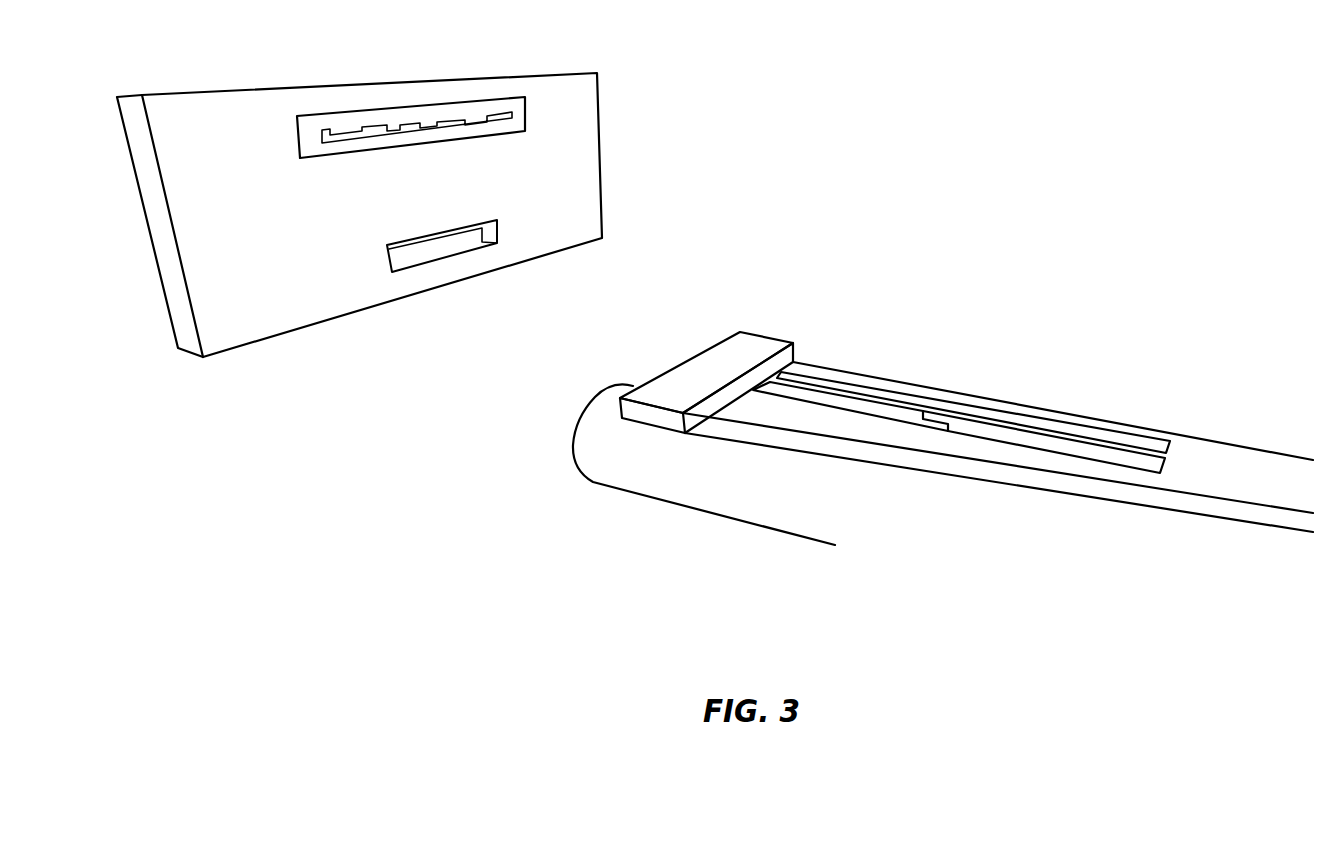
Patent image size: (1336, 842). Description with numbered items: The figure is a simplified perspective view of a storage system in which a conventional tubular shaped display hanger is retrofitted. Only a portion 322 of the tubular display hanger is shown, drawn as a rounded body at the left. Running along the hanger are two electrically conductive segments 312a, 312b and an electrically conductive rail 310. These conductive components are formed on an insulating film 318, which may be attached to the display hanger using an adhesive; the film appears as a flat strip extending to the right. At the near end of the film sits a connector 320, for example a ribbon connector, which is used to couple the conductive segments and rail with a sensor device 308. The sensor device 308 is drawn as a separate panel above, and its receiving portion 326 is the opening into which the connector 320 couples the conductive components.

The sensor device 308 is at (564, 72).
The receiving portion 326 is at (292, 134).
The connector 320 is at (750, 352).
The electrically conductive rail 310 is at (961, 485).
The electrically conductive segment 312a is at (877, 407).
The electrically conductive segment 312b is at (1100, 452).
The insulating film 318 is at (1236, 474).
The portion of tubular shaped display hanger 322 is at (588, 448).